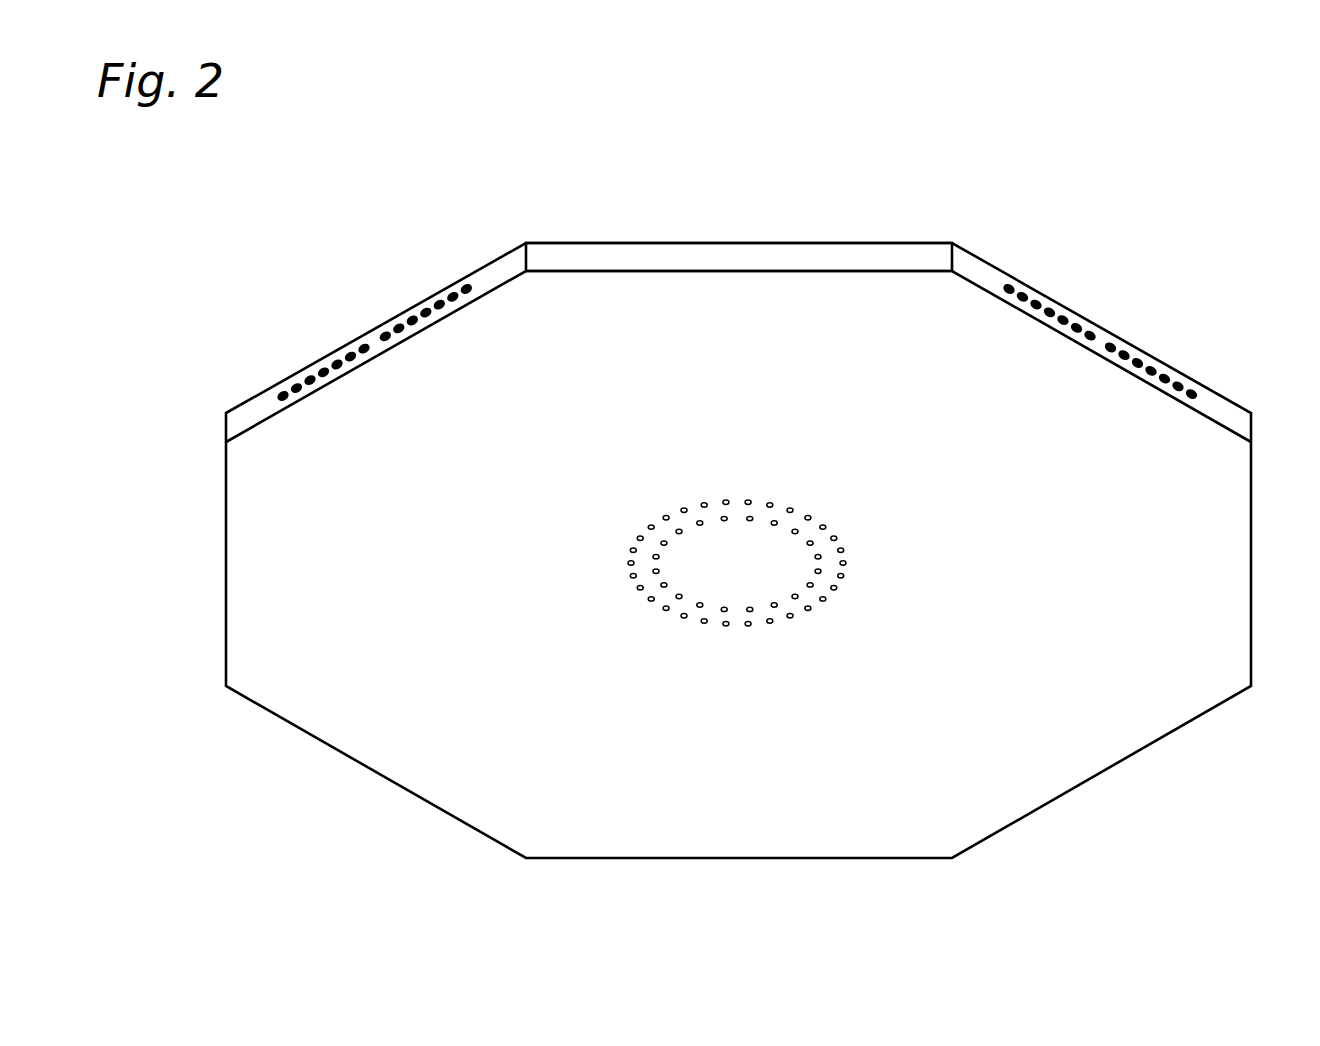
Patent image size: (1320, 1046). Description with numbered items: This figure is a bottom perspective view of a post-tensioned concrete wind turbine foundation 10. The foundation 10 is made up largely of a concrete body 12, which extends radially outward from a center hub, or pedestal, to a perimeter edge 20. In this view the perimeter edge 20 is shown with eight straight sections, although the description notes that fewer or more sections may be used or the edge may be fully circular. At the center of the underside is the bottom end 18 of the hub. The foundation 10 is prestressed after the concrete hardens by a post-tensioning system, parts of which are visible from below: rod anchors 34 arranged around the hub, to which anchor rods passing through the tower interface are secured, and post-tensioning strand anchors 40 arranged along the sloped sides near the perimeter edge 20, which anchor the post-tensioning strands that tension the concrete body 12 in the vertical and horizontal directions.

The foundation 10 is at (1190, 218).
The concrete body 12 is at (285, 503).
The bottom end 18 is at (781, 560).
The perimeter edge 20 is at (610, 250).
The rod anchors 34 is at (701, 607).
The post-tensioning strand anchors 40 is at (412, 310).